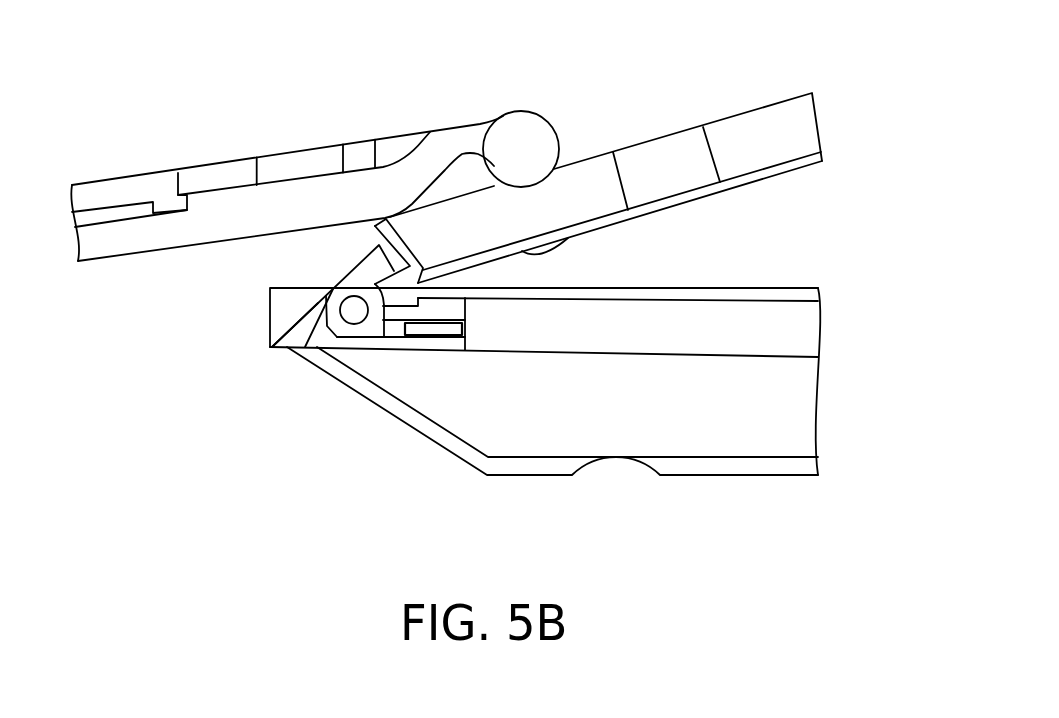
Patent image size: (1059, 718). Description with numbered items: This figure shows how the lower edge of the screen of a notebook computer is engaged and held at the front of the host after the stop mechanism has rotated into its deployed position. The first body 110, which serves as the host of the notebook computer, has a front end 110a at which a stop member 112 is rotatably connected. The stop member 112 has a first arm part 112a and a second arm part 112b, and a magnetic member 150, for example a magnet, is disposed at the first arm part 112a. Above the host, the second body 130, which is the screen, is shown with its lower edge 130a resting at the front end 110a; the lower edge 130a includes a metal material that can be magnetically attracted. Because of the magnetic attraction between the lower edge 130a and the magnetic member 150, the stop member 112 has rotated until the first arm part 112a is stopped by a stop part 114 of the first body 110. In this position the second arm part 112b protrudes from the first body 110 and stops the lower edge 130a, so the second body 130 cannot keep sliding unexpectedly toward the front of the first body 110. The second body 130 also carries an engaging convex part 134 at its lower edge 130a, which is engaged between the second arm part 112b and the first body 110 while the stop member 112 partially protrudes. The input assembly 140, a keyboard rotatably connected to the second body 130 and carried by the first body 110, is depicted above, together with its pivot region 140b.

The first body 110 is at (752, 413).
The front end 110a is at (250, 308).
The stop member 112 is at (362, 345).
The first arm part 112a is at (393, 328).
The second arm part 112b is at (270, 348).
The stop part 114 is at (453, 308).
The second body 130 is at (772, 123).
The lower edge 130a is at (352, 246).
The engaging convex part 134 is at (398, 273).
The input assembly 140 is at (127, 240).
The pivot shaft 140b is at (527, 130).
The magnetic member 150 is at (433, 328).